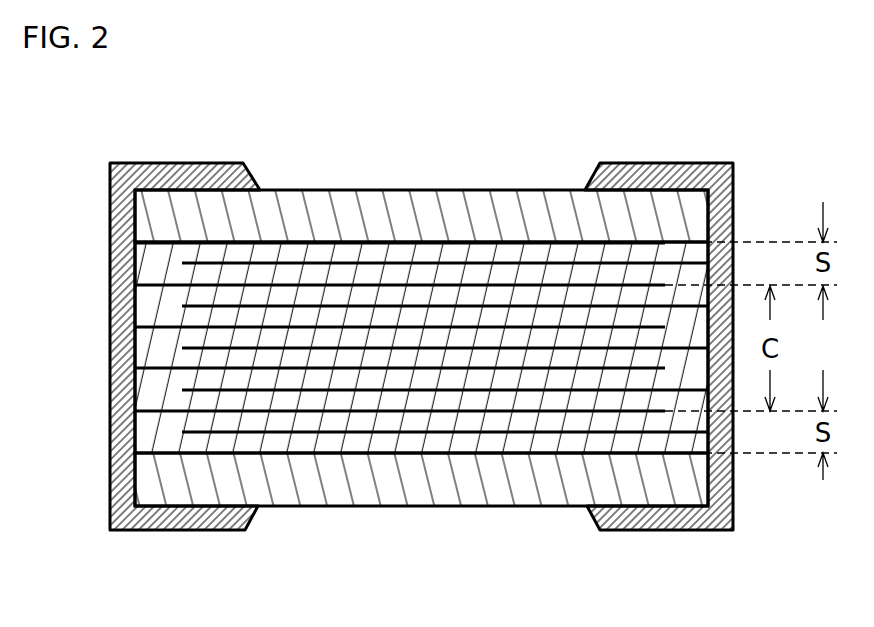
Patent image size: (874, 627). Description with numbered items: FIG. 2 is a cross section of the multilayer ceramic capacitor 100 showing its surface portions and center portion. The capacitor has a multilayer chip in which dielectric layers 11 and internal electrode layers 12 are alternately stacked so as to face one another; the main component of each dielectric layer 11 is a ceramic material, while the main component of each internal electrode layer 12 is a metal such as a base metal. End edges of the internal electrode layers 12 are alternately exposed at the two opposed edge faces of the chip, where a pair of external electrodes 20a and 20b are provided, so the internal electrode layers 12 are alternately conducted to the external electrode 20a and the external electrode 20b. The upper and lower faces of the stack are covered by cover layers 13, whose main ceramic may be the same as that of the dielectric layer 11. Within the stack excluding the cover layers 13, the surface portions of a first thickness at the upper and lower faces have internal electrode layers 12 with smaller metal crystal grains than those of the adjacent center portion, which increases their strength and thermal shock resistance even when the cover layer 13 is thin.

The multilayer ceramic capacitor 100 is at (422, 297).
The external electrode 20a is at (113, 165).
The external electrode 20b is at (731, 165).
The cover layer 13 is at (320, 207).
The internal electrode layer 12 is at (415, 390).
The dielectric layer 11 is at (538, 418).